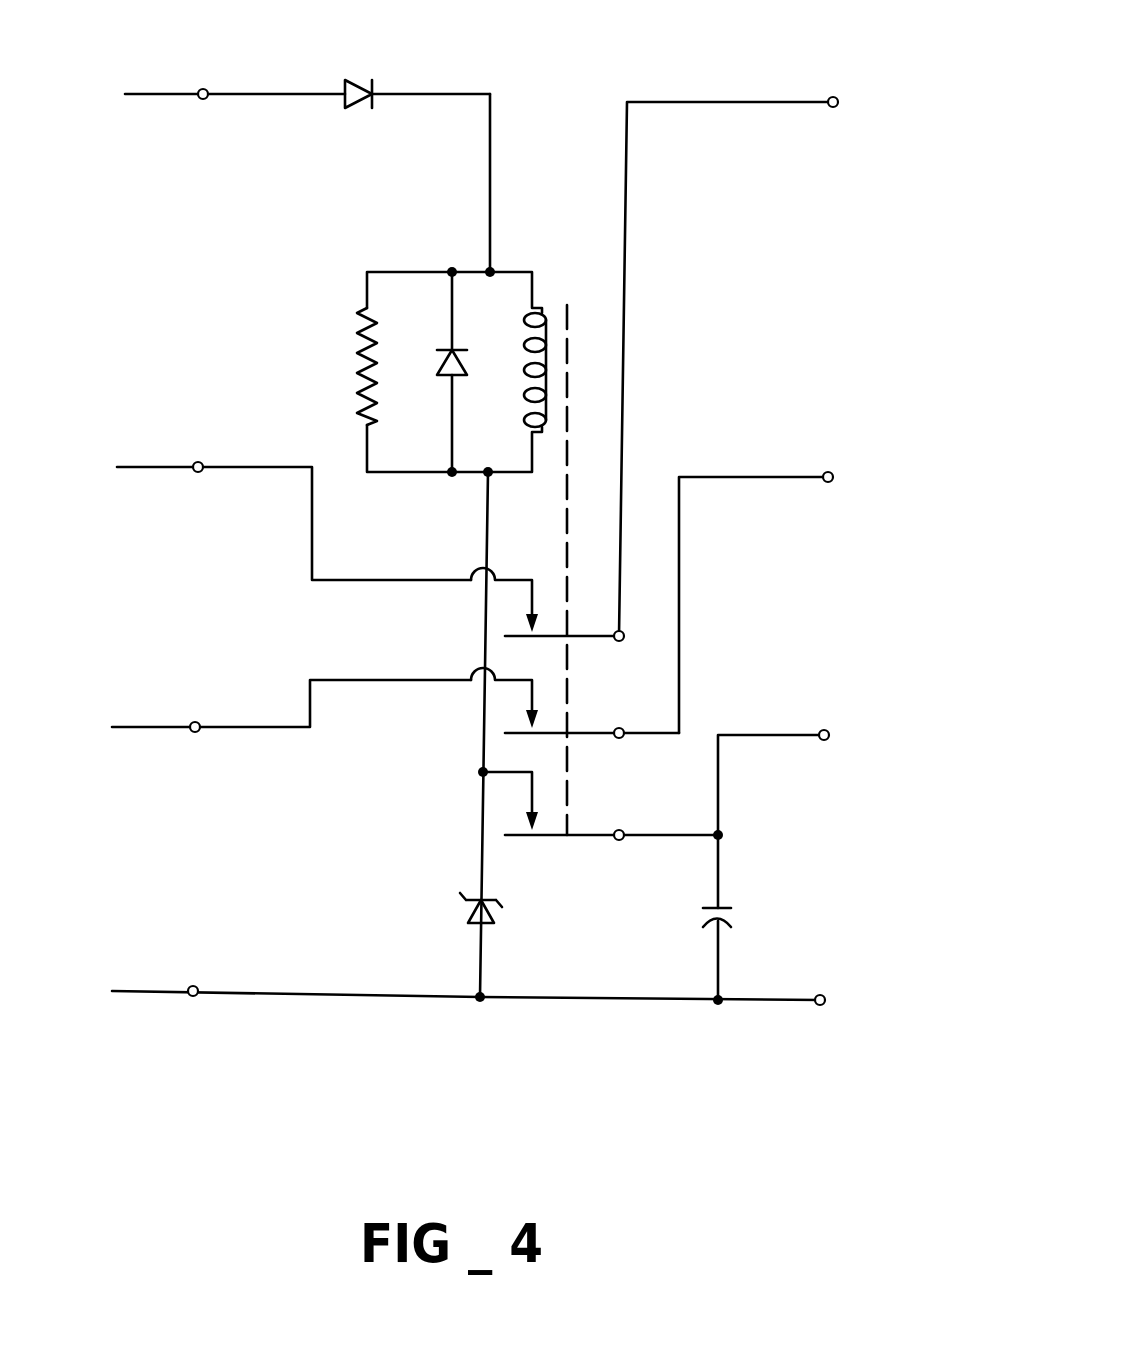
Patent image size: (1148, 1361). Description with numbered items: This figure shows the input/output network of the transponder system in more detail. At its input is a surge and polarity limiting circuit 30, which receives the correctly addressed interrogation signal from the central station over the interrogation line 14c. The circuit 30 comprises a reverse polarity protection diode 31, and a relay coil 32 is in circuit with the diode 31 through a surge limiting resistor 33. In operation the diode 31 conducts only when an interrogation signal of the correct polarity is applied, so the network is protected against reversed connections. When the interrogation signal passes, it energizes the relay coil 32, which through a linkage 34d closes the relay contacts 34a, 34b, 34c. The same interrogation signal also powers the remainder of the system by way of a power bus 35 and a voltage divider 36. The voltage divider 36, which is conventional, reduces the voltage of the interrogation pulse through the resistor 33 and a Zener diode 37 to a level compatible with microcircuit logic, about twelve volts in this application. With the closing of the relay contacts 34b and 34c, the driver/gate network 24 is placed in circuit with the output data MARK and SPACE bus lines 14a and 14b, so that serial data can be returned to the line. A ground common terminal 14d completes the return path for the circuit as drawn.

The MARK bus line 14a is at (153, 725).
The SPACE bus line 14b is at (150, 465).
The interrogation line 14c is at (165, 92).
The ground common terminal 14d is at (150, 990).
The gate/driver network 24 is at (781, 383).
The surge and polarity limiting circuit 30 is at (465, 176).
The reverse polarity protection diode 31 is at (353, 82).
The relay coil 32 is at (527, 345).
The surge limiting resistor 33 is at (360, 362).
The relay contact 34a is at (583, 640).
The relay contact 34b is at (585, 737).
The relay contact 34c is at (585, 838).
The linkage 34d is at (573, 318).
The power bus 35 is at (762, 733).
The voltage divider 36 is at (680, 924).
The Zener diode 37 is at (463, 902).